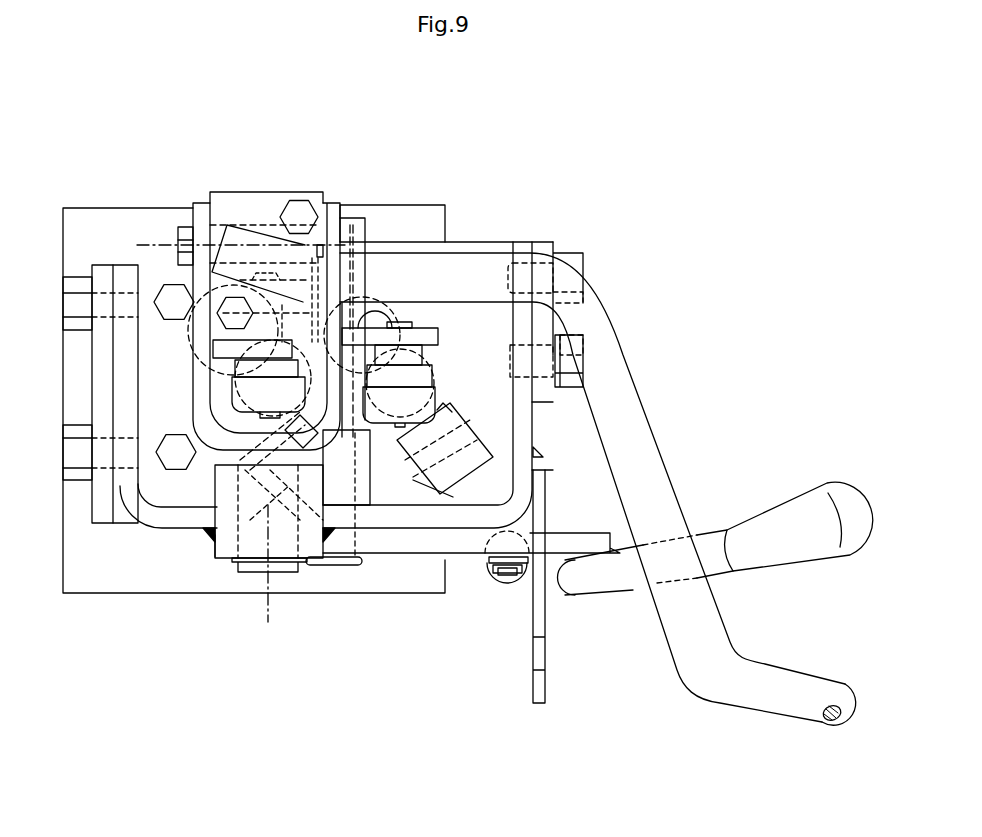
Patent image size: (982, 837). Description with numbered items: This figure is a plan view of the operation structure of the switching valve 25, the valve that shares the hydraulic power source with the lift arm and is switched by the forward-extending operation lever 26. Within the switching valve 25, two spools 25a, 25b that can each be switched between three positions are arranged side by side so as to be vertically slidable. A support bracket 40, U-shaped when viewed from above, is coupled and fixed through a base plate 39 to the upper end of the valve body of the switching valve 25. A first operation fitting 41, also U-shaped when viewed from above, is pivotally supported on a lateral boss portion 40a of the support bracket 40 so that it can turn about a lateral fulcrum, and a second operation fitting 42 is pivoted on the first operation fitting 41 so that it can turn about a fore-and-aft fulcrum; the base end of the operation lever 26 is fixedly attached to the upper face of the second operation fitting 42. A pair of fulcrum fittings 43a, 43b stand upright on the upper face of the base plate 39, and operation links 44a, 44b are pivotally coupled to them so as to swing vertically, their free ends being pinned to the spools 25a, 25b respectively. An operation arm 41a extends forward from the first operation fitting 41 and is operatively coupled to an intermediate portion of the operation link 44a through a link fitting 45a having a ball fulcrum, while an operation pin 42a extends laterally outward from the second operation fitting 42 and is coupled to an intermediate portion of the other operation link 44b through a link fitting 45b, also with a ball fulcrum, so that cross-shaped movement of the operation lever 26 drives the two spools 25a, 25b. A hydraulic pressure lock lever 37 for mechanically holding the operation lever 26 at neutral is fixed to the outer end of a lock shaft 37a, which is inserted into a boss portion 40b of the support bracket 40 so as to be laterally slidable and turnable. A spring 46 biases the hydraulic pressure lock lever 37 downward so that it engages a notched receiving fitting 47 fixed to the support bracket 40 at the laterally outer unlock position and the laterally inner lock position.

The switching valve 25 is at (138, 597).
The spool 25a is at (374, 324).
The spool 25b is at (248, 392).
The operation lever 26 is at (760, 704).
The hydraulic pressure lock lever 37 is at (786, 500).
The lock shaft 37a is at (345, 230).
The base plate 39 is at (103, 522).
The support bracket 40 is at (187, 523).
The lateral boss portion 40a is at (224, 552).
The boss portion 40b is at (367, 478).
The first operation fitting 41 is at (197, 218).
The operation arm 41a is at (430, 332).
The second operation fitting 42 is at (248, 195).
The operation pin 42a is at (300, 342).
The fulcrum fitting 43a is at (450, 490).
The fulcrum fitting 43b is at (332, 565).
The operation link 44a is at (414, 324).
The operation link 44b is at (225, 330).
The link fitting 45a is at (436, 395).
The link fitting 45b is at (227, 425).
The spring 46 is at (505, 560).
The notched receiving fitting 47 is at (548, 684).